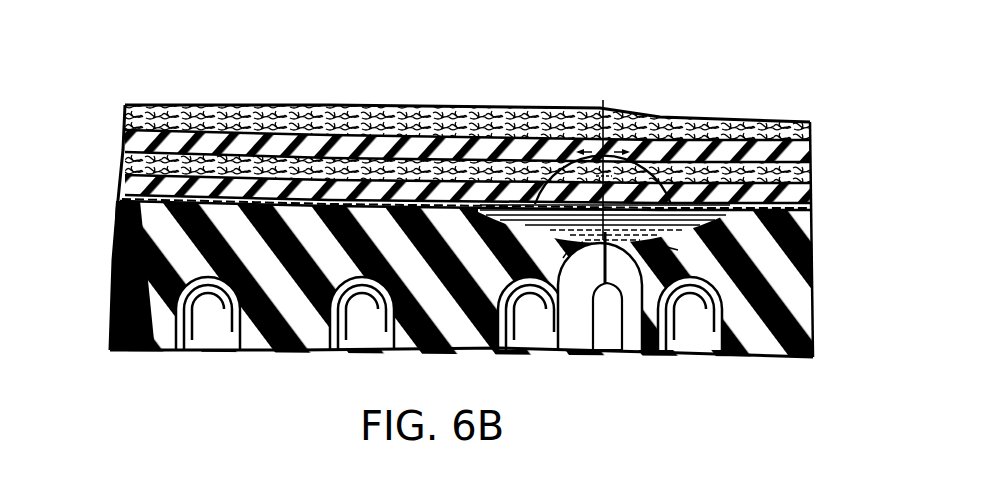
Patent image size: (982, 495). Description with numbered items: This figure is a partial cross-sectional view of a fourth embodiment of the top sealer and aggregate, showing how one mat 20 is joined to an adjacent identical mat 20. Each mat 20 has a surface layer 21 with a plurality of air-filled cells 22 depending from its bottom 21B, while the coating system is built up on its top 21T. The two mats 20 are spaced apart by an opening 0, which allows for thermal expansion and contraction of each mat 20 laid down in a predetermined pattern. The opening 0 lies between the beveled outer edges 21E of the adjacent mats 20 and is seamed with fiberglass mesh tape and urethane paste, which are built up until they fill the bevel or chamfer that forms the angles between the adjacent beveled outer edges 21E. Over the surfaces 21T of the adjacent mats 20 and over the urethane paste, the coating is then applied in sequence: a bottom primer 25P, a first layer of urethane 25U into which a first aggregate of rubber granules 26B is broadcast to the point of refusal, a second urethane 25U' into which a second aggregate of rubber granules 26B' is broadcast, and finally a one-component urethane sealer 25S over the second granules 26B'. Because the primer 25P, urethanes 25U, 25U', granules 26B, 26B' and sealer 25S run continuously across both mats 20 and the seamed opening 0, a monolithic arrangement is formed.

The mat 20 is at (124, 364).
The surface layer 21 is at (117, 283).
The top of the surface layer 21T is at (182, 242).
The bottom of the surface layer 21B is at (222, 335).
The beveled outer edge 21E is at (512, 215).
The air-filled cell 22 is at (205, 345).
The urethane sealer 25S is at (176, 105).
The urethane 25U is at (427, 167).
The second urethane 25U' is at (507, 134).
The bottom primer 25P is at (118, 198).
The aggregate of rubber granules 26B is at (435, 122).
The second aggregate of rubber granules 26B' is at (470, 86).
The opening 0 is at (637, 352).